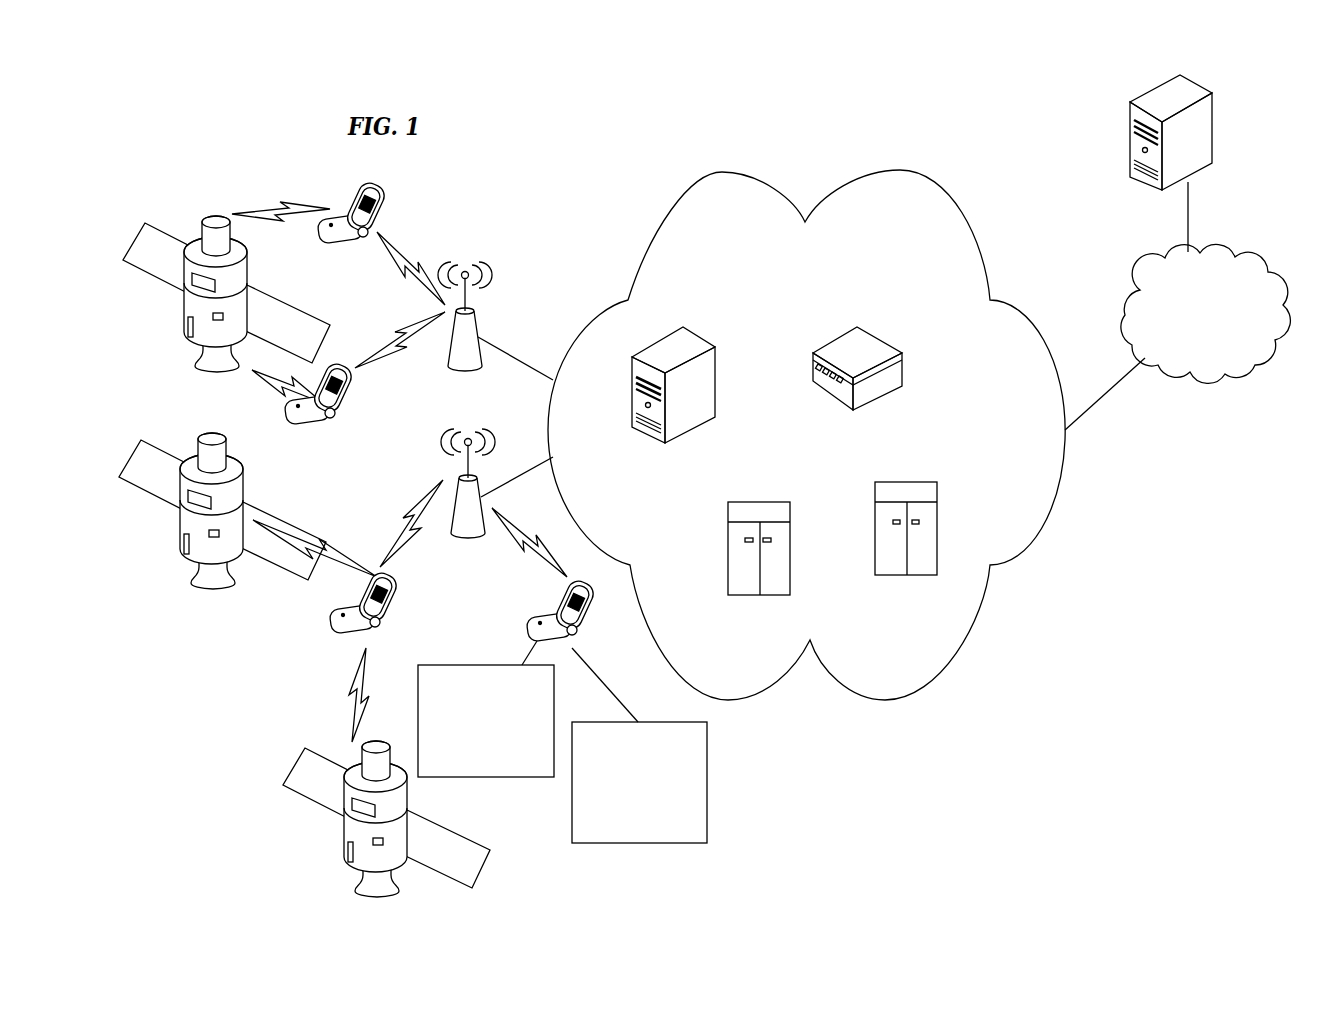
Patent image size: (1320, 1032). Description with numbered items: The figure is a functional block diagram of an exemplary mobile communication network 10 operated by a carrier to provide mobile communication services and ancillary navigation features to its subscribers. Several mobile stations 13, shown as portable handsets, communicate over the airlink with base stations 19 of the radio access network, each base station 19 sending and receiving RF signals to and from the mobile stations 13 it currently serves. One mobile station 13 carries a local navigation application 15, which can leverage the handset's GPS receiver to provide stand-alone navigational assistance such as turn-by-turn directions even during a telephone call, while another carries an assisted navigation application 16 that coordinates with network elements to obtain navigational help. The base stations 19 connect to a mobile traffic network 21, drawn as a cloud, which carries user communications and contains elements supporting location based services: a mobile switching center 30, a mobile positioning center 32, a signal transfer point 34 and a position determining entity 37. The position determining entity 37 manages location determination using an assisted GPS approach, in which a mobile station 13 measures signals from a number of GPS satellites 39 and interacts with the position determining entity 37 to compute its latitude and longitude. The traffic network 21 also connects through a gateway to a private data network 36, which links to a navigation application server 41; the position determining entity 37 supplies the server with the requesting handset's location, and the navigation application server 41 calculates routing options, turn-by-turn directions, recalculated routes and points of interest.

The mobile communication network 10 is at (567, 184).
The mobile station 13 is at (382, 203).
The local navigation application 15 is at (476, 665).
The assisted navigation application 16 is at (707, 783).
The base station 19 is at (470, 308).
The mobile traffic network 21 is at (957, 273).
The mobile switching center 30 is at (695, 427).
The mobile positioning center 32 is at (812, 362).
The signal transfer point 34 is at (875, 512).
The private data network 36 is at (1133, 275).
The position determining entity 37 is at (728, 532).
The GPS satellite 39 is at (304, 570).
The navigation application server 41 is at (1200, 83).